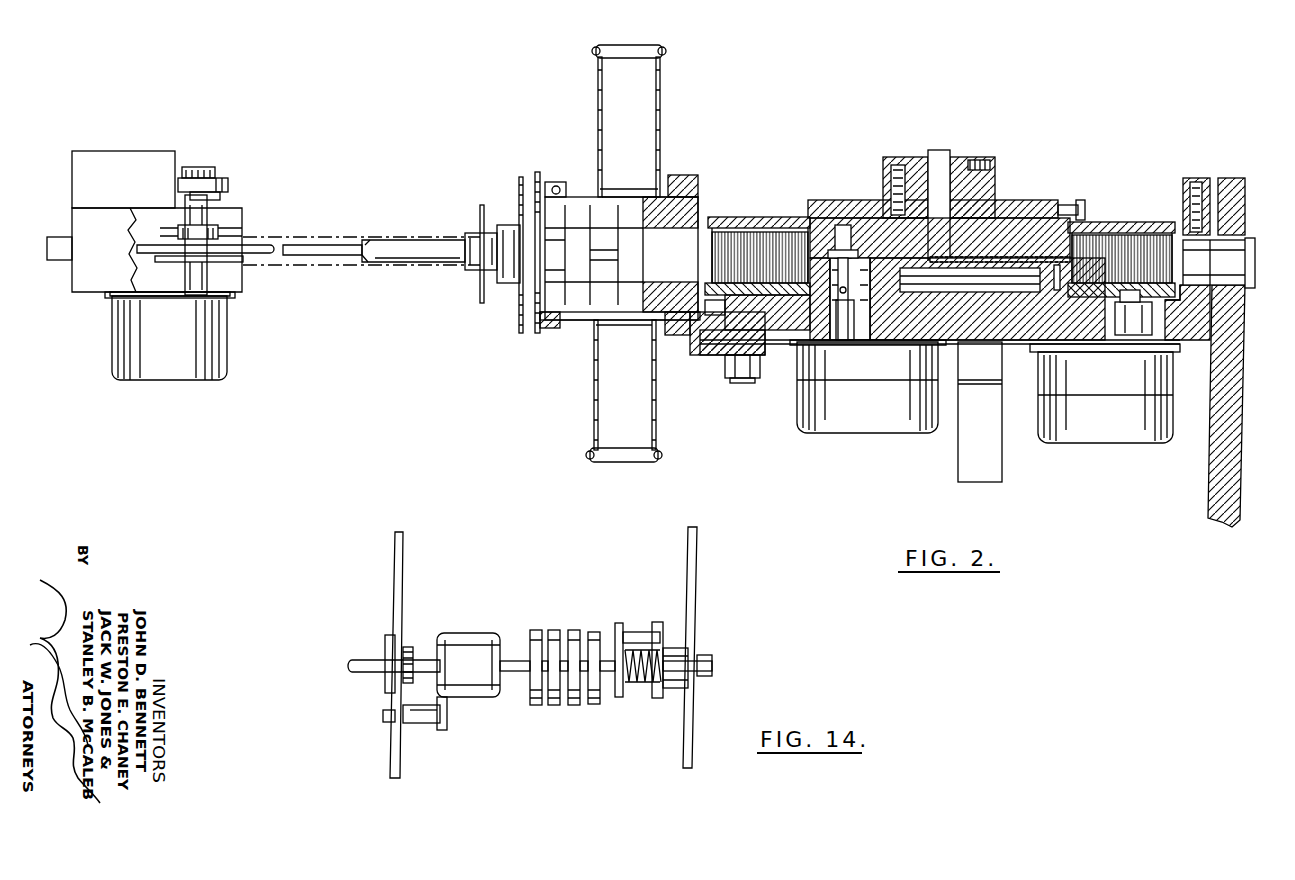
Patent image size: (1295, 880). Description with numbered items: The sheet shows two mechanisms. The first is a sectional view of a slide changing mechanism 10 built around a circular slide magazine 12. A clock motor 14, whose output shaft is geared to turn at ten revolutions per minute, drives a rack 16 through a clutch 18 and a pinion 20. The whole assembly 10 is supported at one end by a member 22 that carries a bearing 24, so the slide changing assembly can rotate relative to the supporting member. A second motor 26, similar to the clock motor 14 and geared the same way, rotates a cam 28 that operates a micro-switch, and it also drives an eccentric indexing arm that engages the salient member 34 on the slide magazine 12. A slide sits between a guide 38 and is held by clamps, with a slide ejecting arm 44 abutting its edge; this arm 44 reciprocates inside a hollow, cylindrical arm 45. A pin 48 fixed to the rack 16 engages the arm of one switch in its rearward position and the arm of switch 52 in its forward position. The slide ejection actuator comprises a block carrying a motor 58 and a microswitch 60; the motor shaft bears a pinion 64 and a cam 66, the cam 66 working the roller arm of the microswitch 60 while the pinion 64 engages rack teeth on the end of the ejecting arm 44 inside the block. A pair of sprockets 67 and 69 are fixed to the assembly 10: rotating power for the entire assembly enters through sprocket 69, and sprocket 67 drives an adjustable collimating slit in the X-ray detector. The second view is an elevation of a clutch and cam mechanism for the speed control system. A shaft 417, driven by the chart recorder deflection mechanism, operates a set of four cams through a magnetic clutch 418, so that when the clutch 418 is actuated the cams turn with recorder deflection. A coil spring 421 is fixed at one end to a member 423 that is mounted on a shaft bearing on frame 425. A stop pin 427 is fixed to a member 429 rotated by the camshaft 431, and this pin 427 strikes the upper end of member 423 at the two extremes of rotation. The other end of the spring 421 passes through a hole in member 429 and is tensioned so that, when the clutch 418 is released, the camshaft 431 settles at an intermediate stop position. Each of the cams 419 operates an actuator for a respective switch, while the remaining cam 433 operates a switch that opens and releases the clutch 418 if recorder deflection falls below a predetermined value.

In FIG. 2, the slide changing mechanism 10 is at (1080, 146).
In FIG. 2, the circular slide magazine 12 is at (760, 217).
In FIG. 2, the clock motor 14 is at (846, 426).
In FIG. 2, the rack 16 is at (1018, 258).
In FIG. 2, the clutch 18 is at (863, 320).
In FIG. 2, the pinion 20 is at (846, 225).
In FIG. 2, the supporting member 22 is at (1230, 178).
In FIG. 2, the bearing 24 is at (1248, 290).
In FIG. 2, the motor 26 is at (1111, 436).
In FIG. 2, the cam 28 is at (1130, 330).
In FIG. 2, the salient member 34 is at (1178, 338).
In FIG. 2, the guide 38 is at (691, 240).
In FIG. 2, the slide ejecting arm 44 is at (318, 264).
In FIG. 2, the hollow arm 45 is at (400, 262).
In FIG. 2, the pin 48 is at (1060, 273).
In FIG. 2, the switch 52 is at (991, 268).
In FIG. 2, the motor 58 is at (228, 340).
In FIG. 2, the microswitch 60 is at (125, 160).
In FIG. 2, the pinion 64 is at (232, 233).
In FIG. 2, the cam 66 is at (222, 177).
In FIG. 2, the sprocket 67 is at (520, 177).
In FIG. 2, the sprocket 69 is at (541, 178).
In FIG. 14, the shaft 417 is at (362, 660).
In FIG. 14, the magnetic clutch 418 is at (478, 640).
In FIG. 14, the cams 419 is at (557, 706).
In FIG. 14, the coil spring 421 is at (636, 686).
In FIG. 14, the member 423 is at (659, 700).
In FIG. 14, the frame 425 is at (696, 602).
In FIG. 14, the stop pin 427 is at (637, 632).
In FIG. 14, the member 429 is at (619, 624).
In FIG. 14, the camshaft 431 is at (515, 672).
In FIG. 14, the cam 433 is at (595, 704).